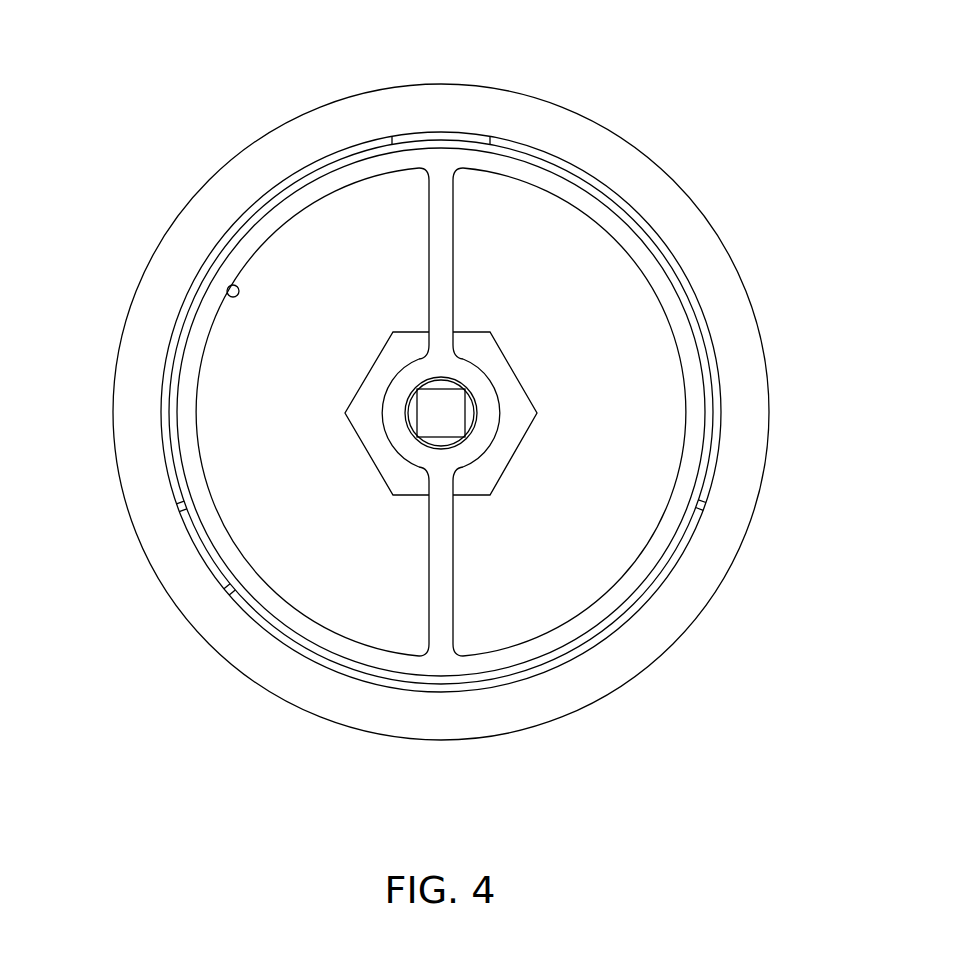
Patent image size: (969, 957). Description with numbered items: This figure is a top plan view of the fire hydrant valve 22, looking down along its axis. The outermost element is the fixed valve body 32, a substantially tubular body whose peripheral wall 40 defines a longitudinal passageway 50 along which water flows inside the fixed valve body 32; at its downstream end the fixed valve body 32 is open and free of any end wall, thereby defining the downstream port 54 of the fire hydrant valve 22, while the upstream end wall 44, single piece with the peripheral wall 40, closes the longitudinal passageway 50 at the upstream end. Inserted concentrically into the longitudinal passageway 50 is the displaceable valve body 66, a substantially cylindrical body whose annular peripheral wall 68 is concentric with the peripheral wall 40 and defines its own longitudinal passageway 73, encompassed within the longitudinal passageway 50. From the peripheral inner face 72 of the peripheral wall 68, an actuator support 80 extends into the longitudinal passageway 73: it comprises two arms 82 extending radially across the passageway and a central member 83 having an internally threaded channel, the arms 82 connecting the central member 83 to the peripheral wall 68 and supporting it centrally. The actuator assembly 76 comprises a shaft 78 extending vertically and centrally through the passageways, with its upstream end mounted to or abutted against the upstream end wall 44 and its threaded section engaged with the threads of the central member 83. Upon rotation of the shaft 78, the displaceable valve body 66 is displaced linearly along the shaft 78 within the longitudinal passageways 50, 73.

The fire hydrant valve 22 is at (180, 72).
The fixed valve body 32 is at (755, 296).
The peripheral wall 40 is at (768, 457).
The upstream end wall 44 is at (355, 574).
The longitudinal passageway 50 is at (518, 238).
The downstream port 54 is at (602, 320).
The displaceable valve body 66 is at (183, 403).
The peripheral wall 68 is at (193, 477).
The peripheral inner face 72 is at (228, 289).
The longitudinal passageway 73 is at (555, 275).
The actuator assembly 76 is at (355, 435).
The shaft 78 is at (450, 417).
The actuator support 80 is at (413, 207).
The arms 82 is at (432, 258).
The central member 83 is at (404, 362).